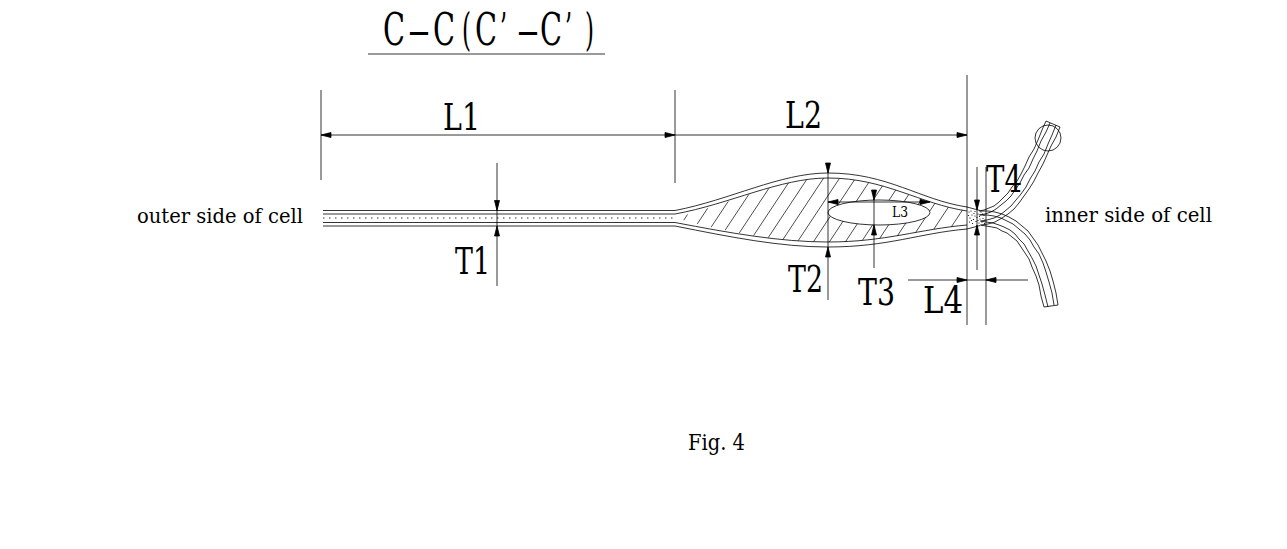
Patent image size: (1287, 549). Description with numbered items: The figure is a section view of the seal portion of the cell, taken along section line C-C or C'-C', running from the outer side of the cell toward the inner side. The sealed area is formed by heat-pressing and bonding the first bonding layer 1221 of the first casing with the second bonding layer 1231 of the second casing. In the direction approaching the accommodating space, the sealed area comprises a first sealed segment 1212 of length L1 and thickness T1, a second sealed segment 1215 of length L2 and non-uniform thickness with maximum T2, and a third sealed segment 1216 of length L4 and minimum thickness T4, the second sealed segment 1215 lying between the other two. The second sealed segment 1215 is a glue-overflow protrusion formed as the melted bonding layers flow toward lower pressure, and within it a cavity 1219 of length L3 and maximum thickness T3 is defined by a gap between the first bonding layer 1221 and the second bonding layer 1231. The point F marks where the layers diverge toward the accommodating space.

The first sealed segment 1212 is at (592, 217).
The second sealed segment 1215 is at (783, 207).
The third sealed segment 1216 is at (975, 207).
The cavity 1219 is at (888, 223).
The first bonding layer 1221 is at (1027, 188).
The second bonding layer 1231 is at (1047, 268).
The reference point F is at (1038, 135).